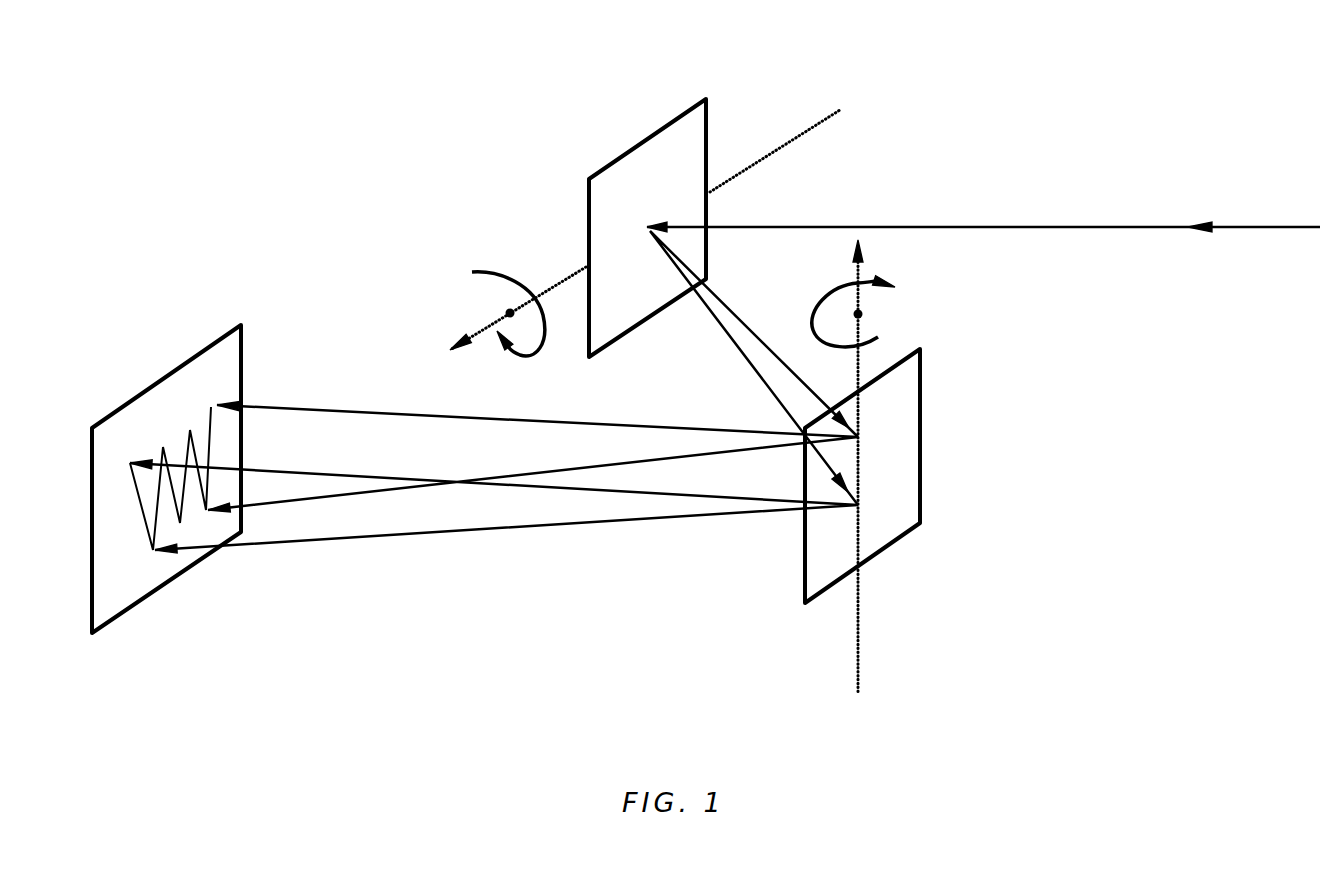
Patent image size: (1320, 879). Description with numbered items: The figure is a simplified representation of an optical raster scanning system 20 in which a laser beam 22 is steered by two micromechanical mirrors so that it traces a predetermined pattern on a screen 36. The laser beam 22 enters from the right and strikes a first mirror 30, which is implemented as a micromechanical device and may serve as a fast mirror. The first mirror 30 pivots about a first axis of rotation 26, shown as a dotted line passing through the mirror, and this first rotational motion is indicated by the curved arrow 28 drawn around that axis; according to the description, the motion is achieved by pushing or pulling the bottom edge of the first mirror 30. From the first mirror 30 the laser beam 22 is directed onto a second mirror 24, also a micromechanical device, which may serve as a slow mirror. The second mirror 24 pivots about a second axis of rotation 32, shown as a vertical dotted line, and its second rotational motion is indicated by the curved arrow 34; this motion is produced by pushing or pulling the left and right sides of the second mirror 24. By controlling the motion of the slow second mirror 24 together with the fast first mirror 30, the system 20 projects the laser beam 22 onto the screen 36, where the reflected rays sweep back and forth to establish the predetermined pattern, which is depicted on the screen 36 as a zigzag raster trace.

The optical raster scanning system 20 is at (959, 97).
The laser beam 22 is at (1003, 225).
The second mirror 24 is at (887, 550).
The first axis of rotation 26 is at (802, 135).
The arrow 28 is at (507, 282).
The first mirror 30 is at (608, 165).
The second axis of rotation 32 is at (860, 650).
The arrow 34 is at (832, 295).
The screen 36 is at (165, 373).